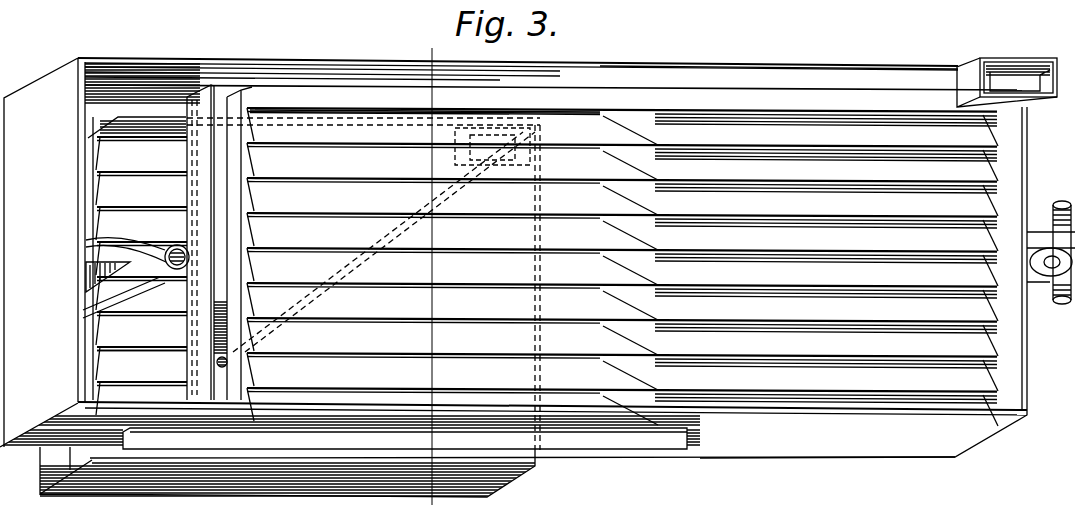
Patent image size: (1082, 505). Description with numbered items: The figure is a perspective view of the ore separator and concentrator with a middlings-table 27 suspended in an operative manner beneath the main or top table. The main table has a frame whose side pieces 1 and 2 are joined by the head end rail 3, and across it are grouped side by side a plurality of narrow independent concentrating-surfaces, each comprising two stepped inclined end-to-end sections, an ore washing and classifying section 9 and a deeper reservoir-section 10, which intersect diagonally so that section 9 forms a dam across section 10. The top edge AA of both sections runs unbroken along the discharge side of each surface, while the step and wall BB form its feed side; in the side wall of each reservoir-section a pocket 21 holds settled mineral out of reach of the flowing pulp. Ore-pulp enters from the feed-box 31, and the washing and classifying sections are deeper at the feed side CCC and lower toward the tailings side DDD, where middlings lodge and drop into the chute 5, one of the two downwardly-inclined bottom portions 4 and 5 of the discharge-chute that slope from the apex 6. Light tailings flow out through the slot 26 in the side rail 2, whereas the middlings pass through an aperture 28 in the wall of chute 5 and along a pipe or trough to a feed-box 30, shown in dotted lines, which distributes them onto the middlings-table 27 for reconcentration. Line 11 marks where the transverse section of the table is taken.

The side piece of the frame 1 is at (712, 65).
The side rail 2 is at (827, 443).
The head end rail 3 is at (1037, 252).
The downwardly-inclined bottom portion of the discharge-chute 4 is at (220, 163).
The chute 5 is at (228, 362).
The apex 6 is at (212, 307).
The ore washing and classifying section 9 is at (517, 267).
The reservoir-section 10 is at (622, 267).
The section line 11 is at (433, 268).
The pocket 21 is at (842, 116).
The slot 26 is at (372, 435).
The middlings-table 27 is at (418, 259).
The aperture 28 is at (215, 363).
The feed-box 30 is at (455, 155).
The feed-box 31 is at (1000, 60).
The top edge AA is at (453, 250).
The step and wall BB is at (602, 113).
The feed side CCC is at (868, 57).
The tailings side DDD is at (577, 470).